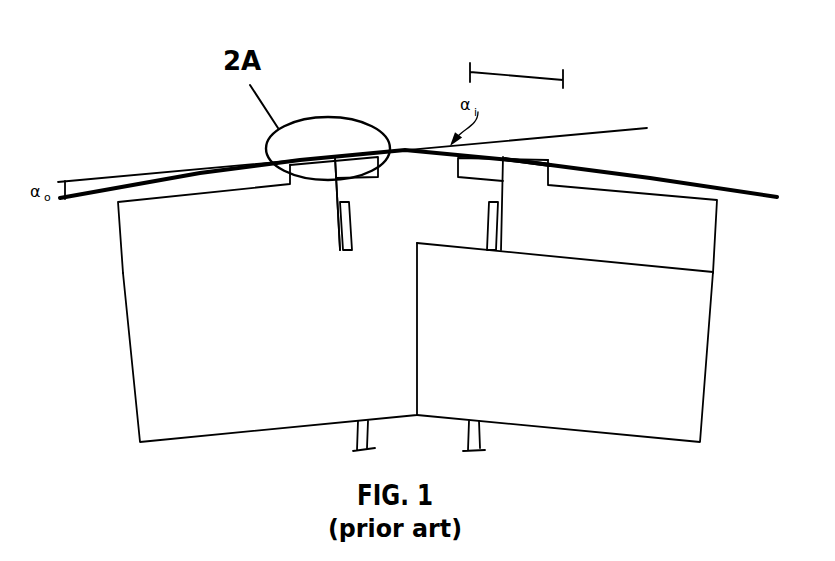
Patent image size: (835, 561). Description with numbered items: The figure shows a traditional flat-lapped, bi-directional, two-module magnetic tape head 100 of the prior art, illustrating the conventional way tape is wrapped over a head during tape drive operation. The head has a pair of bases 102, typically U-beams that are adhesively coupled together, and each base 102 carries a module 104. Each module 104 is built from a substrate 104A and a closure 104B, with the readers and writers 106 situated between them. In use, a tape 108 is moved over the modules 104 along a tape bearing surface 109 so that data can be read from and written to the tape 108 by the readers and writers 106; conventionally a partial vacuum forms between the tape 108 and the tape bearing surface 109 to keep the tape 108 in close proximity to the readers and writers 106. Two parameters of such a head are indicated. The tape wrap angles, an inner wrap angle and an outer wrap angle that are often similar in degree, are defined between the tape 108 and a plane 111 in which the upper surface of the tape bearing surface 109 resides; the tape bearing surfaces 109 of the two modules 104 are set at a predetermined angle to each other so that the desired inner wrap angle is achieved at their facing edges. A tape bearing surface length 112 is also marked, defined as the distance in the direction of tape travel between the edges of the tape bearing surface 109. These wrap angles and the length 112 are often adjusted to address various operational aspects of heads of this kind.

The magnetic tape head 100 is at (212, 121).
The base 102 is at (127, 334).
The module 104 is at (118, 243).
The substrate 104A is at (178, 222).
The closure 104B is at (453, 172).
The readers and writers 106 is at (333, 140).
The tape 108 is at (713, 182).
The tape bearing surface 109 is at (528, 143).
The plane 111 is at (627, 128).
The tape bearing surface length 112 is at (537, 58).